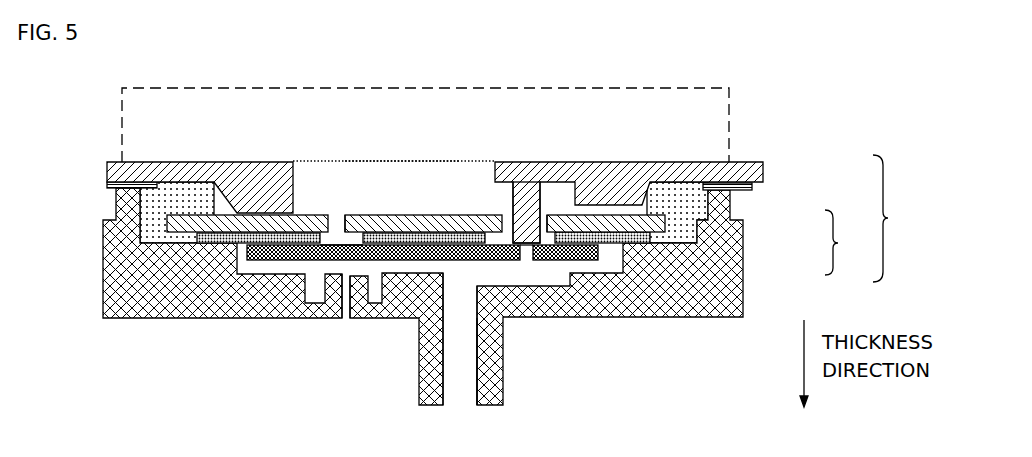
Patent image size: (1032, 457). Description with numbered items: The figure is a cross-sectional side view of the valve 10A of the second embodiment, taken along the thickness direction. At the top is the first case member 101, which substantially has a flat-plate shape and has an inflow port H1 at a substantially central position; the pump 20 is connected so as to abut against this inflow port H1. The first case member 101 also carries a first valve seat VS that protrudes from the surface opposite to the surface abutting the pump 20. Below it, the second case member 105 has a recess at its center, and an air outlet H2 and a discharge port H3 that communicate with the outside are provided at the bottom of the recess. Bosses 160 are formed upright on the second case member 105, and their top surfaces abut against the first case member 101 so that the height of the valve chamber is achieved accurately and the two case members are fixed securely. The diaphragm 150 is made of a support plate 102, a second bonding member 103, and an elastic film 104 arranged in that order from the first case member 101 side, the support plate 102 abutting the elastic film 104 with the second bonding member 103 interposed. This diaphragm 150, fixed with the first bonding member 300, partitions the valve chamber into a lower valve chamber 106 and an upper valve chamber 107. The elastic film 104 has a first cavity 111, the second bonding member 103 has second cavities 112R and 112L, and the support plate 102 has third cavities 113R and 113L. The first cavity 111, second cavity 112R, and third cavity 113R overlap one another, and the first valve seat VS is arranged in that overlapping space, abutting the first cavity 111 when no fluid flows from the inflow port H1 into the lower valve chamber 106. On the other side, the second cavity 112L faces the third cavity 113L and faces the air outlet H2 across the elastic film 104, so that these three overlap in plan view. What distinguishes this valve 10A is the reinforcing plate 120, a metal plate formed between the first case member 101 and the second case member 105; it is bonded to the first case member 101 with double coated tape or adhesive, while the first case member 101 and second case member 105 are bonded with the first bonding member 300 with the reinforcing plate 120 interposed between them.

The pump 20 is at (700, 92).
The valve 10A is at (486, 227).
The first bonding member 300 is at (425, 146).
The reinforcing plate 120 is at (115, 180).
The second case member 105 is at (737, 303).
The boss 160 is at (115, 200).
The first case member 101 is at (763, 172).
The first valve seat VS is at (525, 195).
The diaphragm 150 is at (518, 245).
The support plate 102 is at (667, 225).
The second bonding member 103 is at (650, 238).
The elastic film 104 is at (598, 255).
The first cavity 111 is at (525, 257).
The inflow port H1 is at (424, 160).
The lower valve chamber 106 is at (456, 173).
The third cavity 113L is at (338, 218).
The third cavity 113R is at (550, 237).
The second cavity 112L is at (335, 238).
The second cavity 112R is at (548, 238).
The air outlet H2 is at (347, 316).
The discharge port H3 is at (457, 383).
The upper valve chamber 107 is at (462, 285).